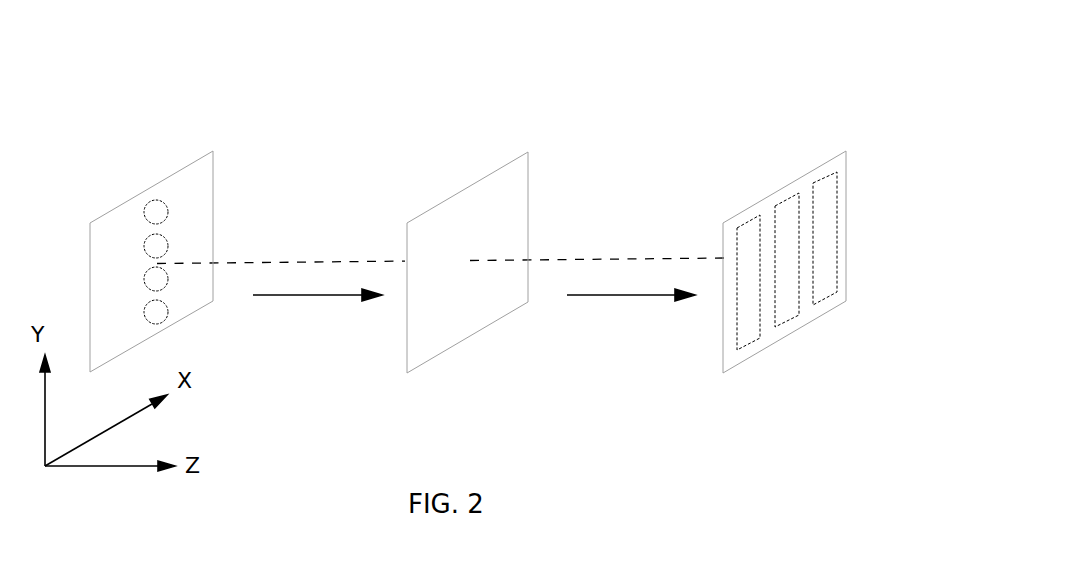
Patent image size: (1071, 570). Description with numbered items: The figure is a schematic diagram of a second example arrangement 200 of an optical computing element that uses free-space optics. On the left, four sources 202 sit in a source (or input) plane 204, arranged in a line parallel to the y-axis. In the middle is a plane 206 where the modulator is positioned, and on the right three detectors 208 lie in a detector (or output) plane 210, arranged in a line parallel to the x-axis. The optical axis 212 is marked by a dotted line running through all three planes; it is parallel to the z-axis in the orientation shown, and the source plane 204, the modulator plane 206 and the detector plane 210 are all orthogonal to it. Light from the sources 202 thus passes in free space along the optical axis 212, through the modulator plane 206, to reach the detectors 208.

The second example arrangement 200 is at (688, 115).
The sources 202 is at (172, 222).
The source plane 204 is at (205, 167).
The plane where the modulator is positioned 206 is at (420, 352).
The detectors 208 is at (823, 285).
The detector plane 210 is at (748, 352).
The optical axis 212 is at (600, 255).